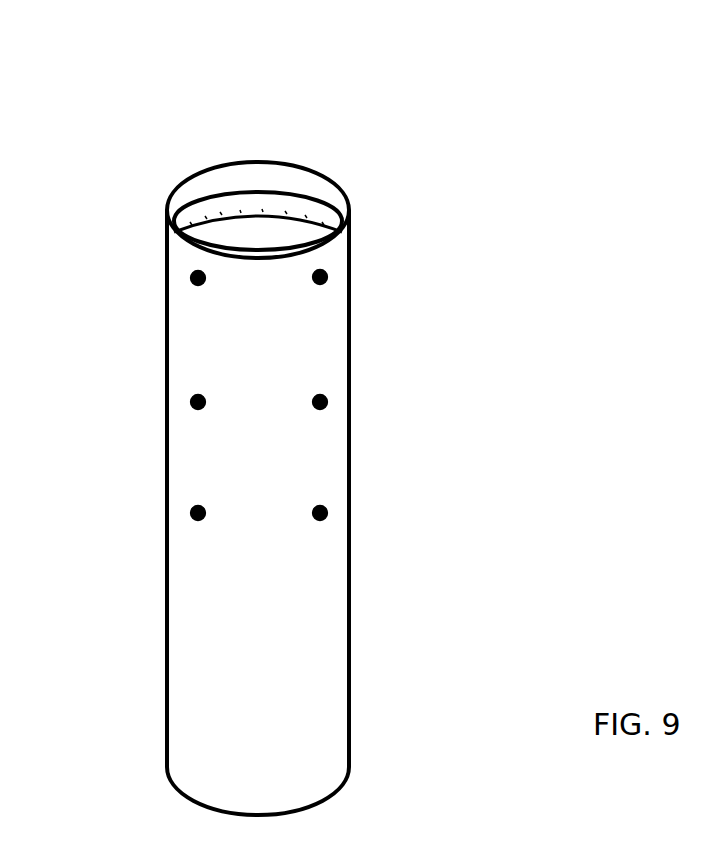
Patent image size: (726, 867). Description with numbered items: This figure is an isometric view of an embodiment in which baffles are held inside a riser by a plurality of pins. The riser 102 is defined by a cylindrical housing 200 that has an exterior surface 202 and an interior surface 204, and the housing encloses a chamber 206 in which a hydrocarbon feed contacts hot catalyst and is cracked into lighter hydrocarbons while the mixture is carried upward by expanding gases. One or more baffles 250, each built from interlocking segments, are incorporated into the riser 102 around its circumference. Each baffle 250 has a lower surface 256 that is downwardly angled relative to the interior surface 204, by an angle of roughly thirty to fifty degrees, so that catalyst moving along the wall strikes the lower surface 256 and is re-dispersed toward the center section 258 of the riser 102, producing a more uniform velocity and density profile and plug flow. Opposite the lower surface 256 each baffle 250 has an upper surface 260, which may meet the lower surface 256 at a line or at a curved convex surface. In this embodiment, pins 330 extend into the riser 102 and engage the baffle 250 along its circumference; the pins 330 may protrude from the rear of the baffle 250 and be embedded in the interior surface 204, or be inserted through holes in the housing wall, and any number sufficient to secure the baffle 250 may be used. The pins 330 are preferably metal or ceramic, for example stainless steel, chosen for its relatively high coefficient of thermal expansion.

The riser 102 is at (338, 252).
The cylindrical housing 200 is at (330, 693).
The exterior surface 202 is at (328, 319).
The interior surface 204 is at (286, 182).
The chamber 206 is at (252, 246).
The baffle 250 is at (213, 203).
The lower surface 256 is at (313, 233).
The center section 258 is at (278, 237).
The upper surface 260 is at (187, 215).
The pins 330 is at (192, 279).